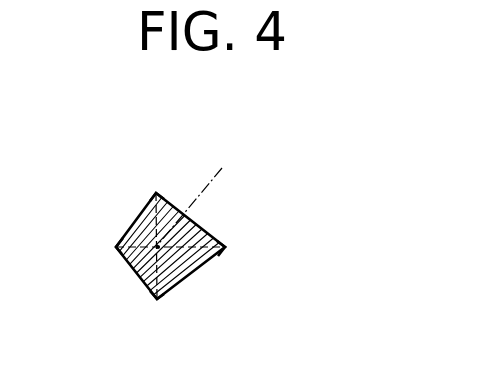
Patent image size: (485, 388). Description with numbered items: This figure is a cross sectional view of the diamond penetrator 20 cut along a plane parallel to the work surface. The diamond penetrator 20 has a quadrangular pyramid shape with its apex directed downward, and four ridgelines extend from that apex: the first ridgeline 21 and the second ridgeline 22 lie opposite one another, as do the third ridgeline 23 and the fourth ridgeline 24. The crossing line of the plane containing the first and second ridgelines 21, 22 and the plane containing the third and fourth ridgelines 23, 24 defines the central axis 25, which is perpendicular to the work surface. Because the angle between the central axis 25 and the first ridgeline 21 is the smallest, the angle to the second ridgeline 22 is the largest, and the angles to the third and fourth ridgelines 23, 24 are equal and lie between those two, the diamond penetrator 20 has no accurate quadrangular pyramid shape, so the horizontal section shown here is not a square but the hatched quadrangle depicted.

The diamond penetrator 20 is at (198, 268).
The first ridgeline 21 is at (116, 247).
The second ridgeline 22 is at (226, 247).
The third ridgeline 23 is at (157, 300).
The fourth ridgeline 24 is at (157, 193).
The central axis 25 is at (204, 199).